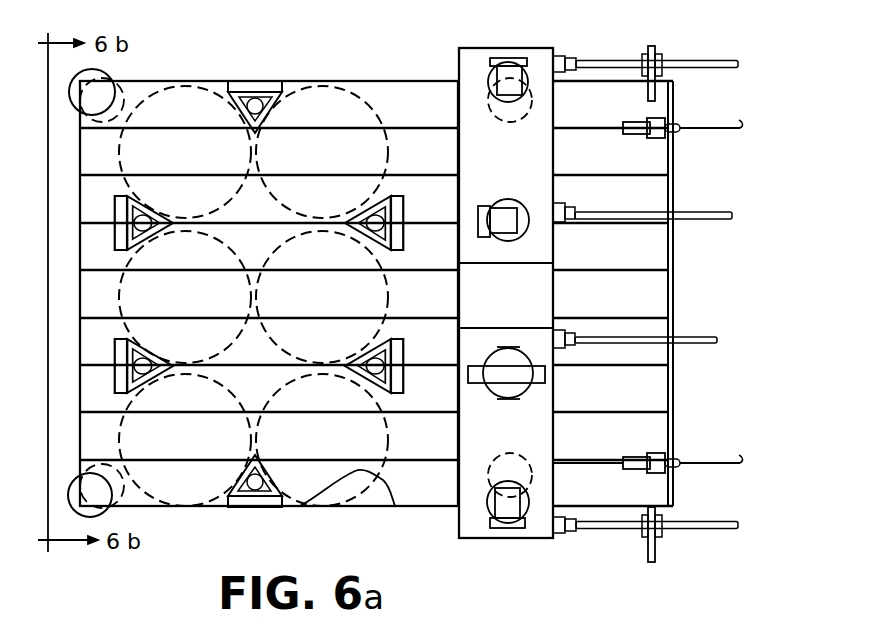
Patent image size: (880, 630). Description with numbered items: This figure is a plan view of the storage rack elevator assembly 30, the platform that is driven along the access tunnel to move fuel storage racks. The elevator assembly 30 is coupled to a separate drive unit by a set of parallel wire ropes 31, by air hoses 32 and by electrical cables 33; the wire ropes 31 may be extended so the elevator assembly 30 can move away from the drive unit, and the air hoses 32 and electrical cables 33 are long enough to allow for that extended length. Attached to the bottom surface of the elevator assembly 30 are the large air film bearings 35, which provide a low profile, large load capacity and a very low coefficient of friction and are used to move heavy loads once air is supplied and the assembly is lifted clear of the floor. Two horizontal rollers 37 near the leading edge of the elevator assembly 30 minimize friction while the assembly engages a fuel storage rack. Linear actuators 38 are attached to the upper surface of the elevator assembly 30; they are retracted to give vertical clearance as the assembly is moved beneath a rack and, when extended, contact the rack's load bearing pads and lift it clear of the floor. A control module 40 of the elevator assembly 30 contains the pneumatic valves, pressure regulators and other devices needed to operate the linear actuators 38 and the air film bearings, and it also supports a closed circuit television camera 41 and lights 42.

The storage rack elevator assembly 30 is at (384, 81).
The wire ropes 31 is at (722, 127).
The air hoses 32 is at (707, 61).
The electrical cables 33 is at (717, 220).
The large air film bearings 35 is at (340, 492).
The horizontal rollers 37 is at (108, 74).
The linear actuators 38 is at (250, 506).
The control module 40 is at (523, 48).
The closed circuit television camera 41 is at (525, 397).
The lights 42 is at (494, 97).